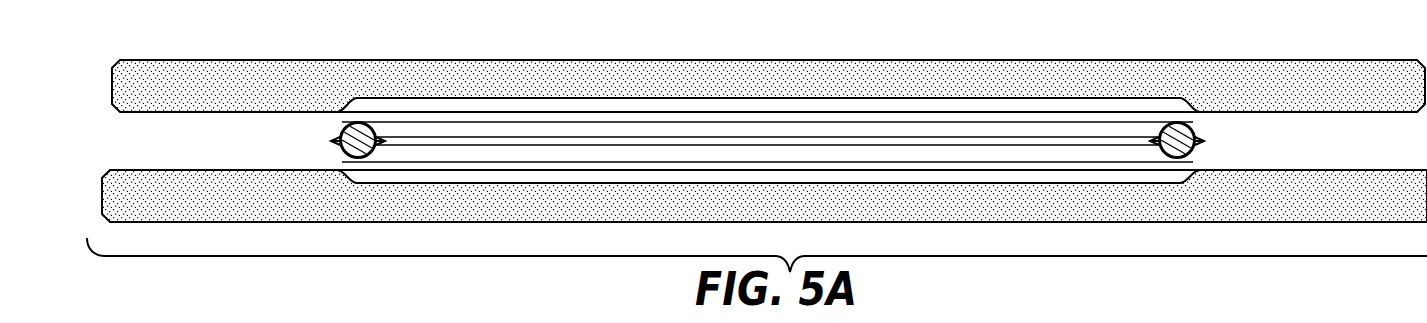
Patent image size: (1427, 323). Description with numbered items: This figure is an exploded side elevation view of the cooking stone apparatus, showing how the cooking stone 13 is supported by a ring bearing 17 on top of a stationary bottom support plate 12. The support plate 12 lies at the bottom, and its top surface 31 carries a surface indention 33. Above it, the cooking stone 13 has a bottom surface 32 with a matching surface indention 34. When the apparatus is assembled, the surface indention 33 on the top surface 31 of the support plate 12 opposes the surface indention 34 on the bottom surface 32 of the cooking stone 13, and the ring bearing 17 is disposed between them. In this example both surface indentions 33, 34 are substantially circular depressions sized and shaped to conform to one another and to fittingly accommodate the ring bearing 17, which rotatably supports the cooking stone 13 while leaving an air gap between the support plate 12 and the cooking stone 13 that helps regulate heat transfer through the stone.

The stationary bottom support plate 12 is at (1363, 183).
The cooking stone 13 is at (1363, 70).
The ring bearing 17 is at (1176, 138).
The top surface 31 is at (243, 170).
The bottom surface 32 is at (177, 113).
The surface indention 33 is at (1158, 183).
The surface indention 34 is at (362, 101).